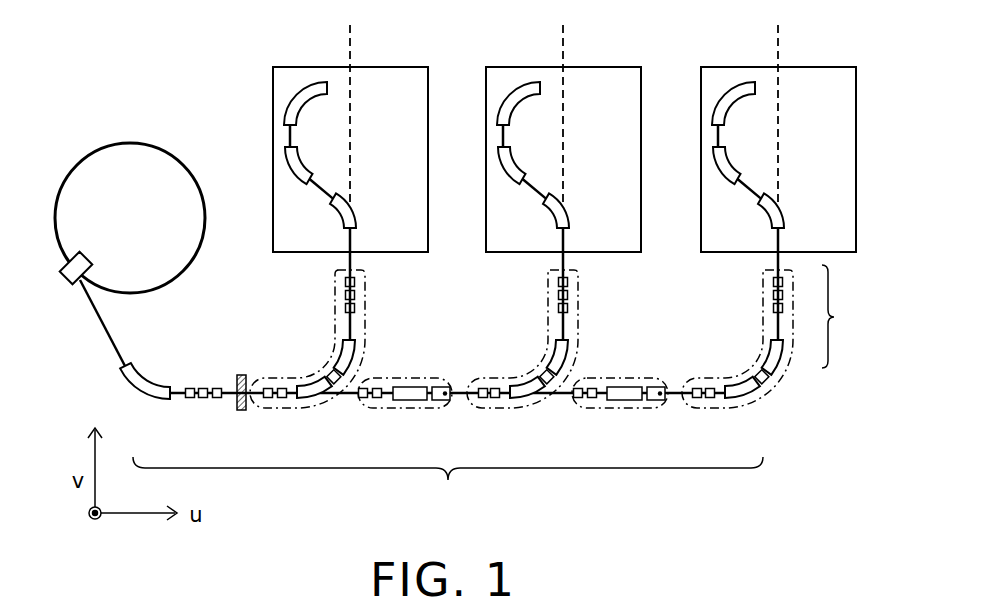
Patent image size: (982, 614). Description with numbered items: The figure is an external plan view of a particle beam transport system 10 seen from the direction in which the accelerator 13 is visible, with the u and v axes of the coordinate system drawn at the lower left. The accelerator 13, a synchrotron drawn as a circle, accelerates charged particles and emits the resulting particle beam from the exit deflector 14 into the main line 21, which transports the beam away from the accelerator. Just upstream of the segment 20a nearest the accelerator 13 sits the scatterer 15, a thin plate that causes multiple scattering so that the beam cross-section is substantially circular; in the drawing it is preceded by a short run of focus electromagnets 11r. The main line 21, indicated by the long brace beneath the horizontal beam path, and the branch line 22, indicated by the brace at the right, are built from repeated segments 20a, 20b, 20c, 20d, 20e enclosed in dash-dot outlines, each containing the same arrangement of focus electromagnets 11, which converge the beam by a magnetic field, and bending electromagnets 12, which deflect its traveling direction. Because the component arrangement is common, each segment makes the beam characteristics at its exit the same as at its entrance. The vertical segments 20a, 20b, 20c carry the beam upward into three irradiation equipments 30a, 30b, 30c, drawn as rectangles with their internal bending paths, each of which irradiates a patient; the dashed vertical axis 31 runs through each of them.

The particle beam transport system 10 is at (241, 333).
The focus electromagnet 11 is at (358, 309).
The quadrupole electromagnet 11r is at (204, 398).
The bending electromagnet 12 is at (316, 386).
The accelerator 13 is at (131, 143).
The exit deflector 14 is at (70, 283).
The scatterer 15 is at (241, 410).
The segment 20a is at (333, 292).
The segment 20b is at (547, 292).
The segment 20c is at (762, 292).
The segment 20d is at (390, 377).
The segment 20e is at (612, 377).
The main line 21 is at (448, 486).
The branch line 22 is at (845, 316).
The irradiation equipment 30a is at (390, 66).
The irradiation equipment 30b is at (592, 66).
The irradiation equipment 30c is at (815, 66).
The rotation axis 31 is at (347, 48).